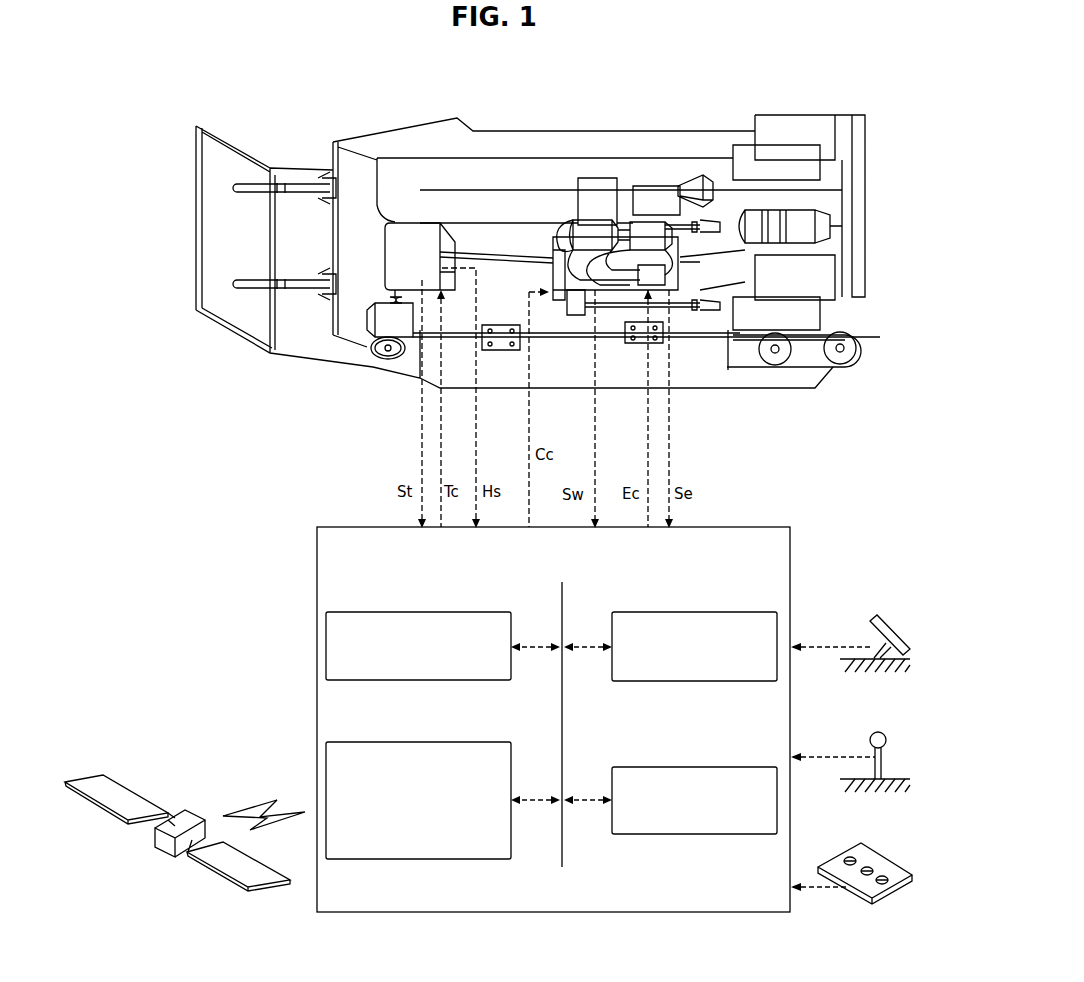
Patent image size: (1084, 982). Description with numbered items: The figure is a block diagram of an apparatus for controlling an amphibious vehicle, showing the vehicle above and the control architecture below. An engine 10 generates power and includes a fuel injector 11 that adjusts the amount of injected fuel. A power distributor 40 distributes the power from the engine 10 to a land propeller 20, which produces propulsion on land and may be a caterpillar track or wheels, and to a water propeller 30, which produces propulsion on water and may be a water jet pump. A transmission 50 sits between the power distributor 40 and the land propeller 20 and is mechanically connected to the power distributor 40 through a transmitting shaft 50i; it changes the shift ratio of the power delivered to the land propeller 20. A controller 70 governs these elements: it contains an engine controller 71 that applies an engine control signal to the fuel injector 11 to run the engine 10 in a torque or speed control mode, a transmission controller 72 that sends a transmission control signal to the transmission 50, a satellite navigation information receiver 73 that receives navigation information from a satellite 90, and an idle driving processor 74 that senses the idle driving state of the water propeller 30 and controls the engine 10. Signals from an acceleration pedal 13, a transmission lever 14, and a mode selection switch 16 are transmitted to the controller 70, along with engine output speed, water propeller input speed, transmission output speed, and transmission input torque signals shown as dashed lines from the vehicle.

The engine 10 is at (640, 257).
The fuel injector 11 is at (656, 270).
The acceleration pedal 13 is at (889, 620).
The transmission lever 14 is at (879, 732).
The mode selection switch 16 is at (885, 876).
The land propeller 20 is at (373, 367).
The water propeller 30 is at (707, 178).
The power distributor 40 is at (552, 240).
The transmission 50 is at (427, 228).
The transmitting shaft 50i is at (507, 258).
The controller 70 is at (317, 578).
The engine controller 71 is at (694, 612).
The transmission controller 72 is at (416, 612).
The satellite navigation information receiver 73 is at (416, 742).
The idle driving processor 74 is at (694, 767).
The satellite 90 is at (160, 877).